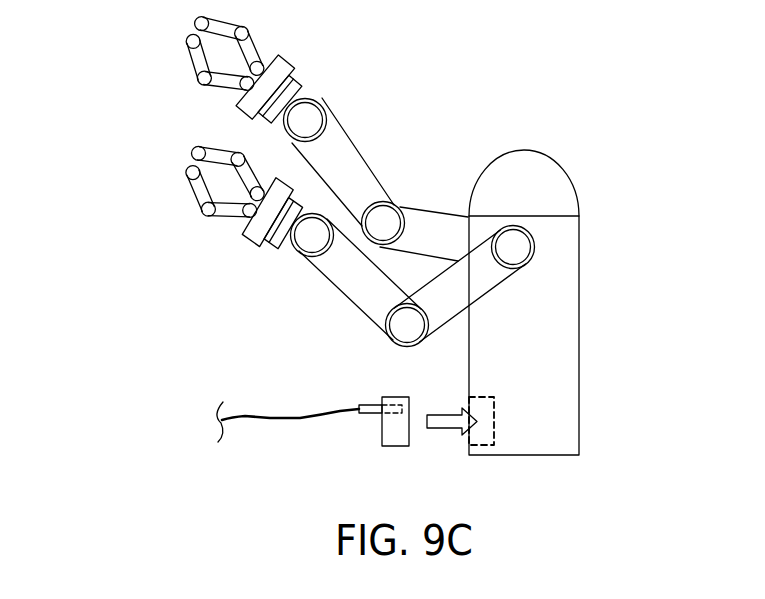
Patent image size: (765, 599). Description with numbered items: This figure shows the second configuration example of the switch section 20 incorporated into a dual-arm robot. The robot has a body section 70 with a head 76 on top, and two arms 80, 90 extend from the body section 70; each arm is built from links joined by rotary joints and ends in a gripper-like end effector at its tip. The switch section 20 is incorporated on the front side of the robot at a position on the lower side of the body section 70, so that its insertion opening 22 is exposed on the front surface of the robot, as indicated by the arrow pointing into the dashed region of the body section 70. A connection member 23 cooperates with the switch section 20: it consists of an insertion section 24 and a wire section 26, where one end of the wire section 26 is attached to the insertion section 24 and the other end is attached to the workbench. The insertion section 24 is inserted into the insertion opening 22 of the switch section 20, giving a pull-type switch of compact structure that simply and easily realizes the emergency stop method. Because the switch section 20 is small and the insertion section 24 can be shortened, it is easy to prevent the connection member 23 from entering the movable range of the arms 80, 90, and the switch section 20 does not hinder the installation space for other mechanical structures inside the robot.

The switch section 20 is at (393, 447).
The insertion opening 22 is at (371, 427).
The connection member 23 is at (299, 388).
The insertion section 24 is at (371, 404).
The wire section 26 is at (378, 373).
The body section 70 is at (579, 317).
The head 76 is at (523, 150).
The arm 80 is at (340, 284).
The arm 90 is at (357, 160).